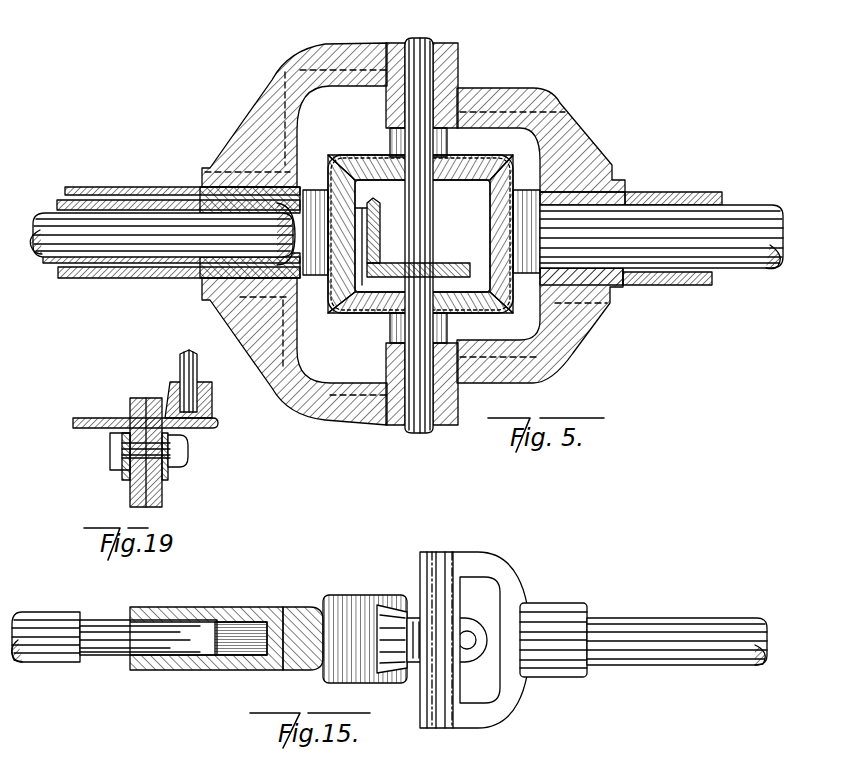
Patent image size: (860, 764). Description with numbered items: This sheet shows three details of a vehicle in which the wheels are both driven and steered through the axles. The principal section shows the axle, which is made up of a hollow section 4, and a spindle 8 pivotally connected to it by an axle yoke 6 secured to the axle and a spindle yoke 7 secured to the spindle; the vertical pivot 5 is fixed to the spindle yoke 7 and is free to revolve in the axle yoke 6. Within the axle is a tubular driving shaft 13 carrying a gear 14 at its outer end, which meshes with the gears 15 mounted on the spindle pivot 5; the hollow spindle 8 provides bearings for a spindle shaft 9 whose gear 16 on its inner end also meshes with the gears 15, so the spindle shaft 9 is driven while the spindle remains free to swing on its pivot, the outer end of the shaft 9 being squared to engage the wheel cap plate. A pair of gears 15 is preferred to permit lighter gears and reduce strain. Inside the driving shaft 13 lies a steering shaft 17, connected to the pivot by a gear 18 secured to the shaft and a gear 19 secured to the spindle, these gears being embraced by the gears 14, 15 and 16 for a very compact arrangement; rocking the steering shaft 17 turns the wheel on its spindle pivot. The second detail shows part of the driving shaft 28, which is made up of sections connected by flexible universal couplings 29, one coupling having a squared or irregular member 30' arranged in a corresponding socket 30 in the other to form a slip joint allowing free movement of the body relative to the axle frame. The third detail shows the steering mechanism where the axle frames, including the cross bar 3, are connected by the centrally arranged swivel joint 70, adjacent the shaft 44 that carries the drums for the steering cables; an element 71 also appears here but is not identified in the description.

In FIG. 5, the pivot 5 is at (420, 38).
In FIG. 5, the axle yoke 6 is at (278, 80).
In FIG. 5, the spindle yoke 7 is at (566, 110).
In FIG. 5, the hollow axle section 4 is at (148, 187).
In FIG. 5, the tubular driving shaft 13 is at (90, 200).
In FIG. 5, the steering shaft 17 is at (42, 214).
In FIG. 5, the spindle 8 is at (680, 192).
In FIG. 5, the spindle shaft 9 is at (758, 206).
In FIG. 5, the gear 15 is at (375, 155).
In FIG. 5, the gear 14 is at (514, 188).
In FIG. 5, the gear 16 is at (326, 294).
In FIG. 5, the gear 18 is at (380, 213).
In FIG. 5, the gear 19 is at (450, 268).
In FIG. 19, the cross bar 3 is at (82, 418).
In FIG. 19, the swivel joint 70 is at (148, 400).
In FIG. 19, the shaft 44 is at (198, 376).
In FIG. 19, the bolt 71 is at (170, 468).
In FIG. 15, the socket 30 is at (114, 625).
In FIG. 15, the splined shaft end 30' is at (241, 621).
In FIG. 15, the universal coupling 29 is at (460, 568).
In FIG. 15, the shaft 28 is at (652, 622).